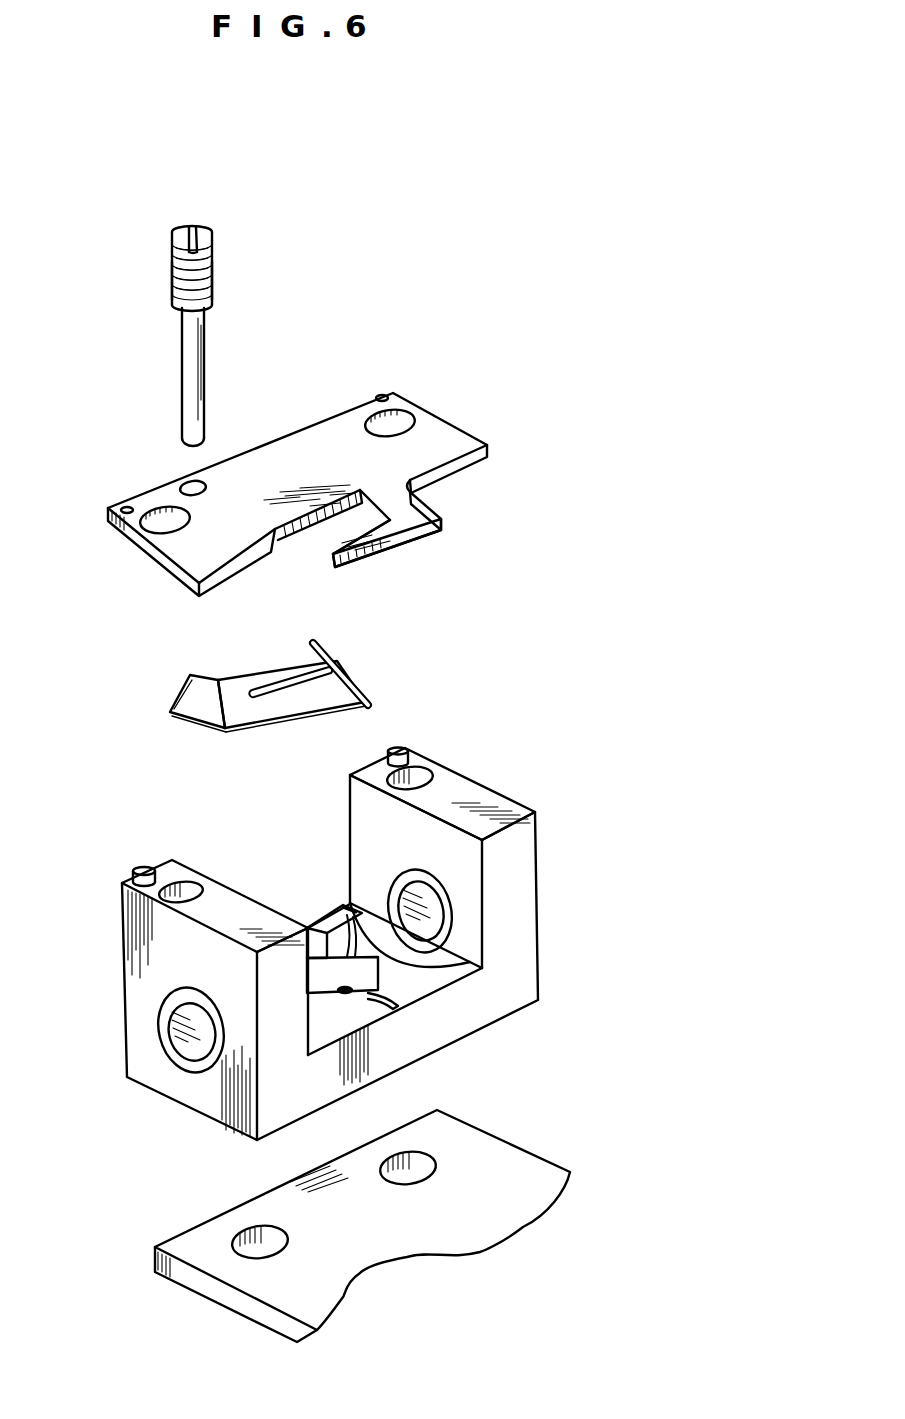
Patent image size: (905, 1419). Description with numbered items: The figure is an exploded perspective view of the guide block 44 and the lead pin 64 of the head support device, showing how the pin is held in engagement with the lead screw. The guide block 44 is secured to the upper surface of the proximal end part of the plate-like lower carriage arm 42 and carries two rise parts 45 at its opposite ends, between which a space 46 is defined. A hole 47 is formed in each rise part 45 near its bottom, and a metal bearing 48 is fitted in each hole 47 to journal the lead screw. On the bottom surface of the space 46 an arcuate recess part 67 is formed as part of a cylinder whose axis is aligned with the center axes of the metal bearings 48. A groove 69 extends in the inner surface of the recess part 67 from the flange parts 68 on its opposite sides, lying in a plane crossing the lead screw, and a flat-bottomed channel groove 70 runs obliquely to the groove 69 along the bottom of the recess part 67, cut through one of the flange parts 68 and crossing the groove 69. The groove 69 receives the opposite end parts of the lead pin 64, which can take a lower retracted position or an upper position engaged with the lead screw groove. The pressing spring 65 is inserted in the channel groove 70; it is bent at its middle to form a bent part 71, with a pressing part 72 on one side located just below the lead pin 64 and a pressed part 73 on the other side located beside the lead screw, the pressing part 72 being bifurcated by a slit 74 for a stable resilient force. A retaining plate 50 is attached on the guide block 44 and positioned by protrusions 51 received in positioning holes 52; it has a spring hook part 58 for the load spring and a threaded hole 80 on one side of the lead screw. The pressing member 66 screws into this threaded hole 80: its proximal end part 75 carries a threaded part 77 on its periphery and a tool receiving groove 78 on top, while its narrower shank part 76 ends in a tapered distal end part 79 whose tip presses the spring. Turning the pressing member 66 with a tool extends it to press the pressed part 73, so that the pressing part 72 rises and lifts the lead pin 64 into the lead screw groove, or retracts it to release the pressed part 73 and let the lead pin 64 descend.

The lower carriage arm 42 is at (178, 1293).
The guide block 44 is at (352, 912).
The rise parts 45 is at (538, 820).
The space 46 is at (379, 937).
The hole 47 is at (440, 902).
The metal bearing 48 is at (470, 952).
The retaining plate 50 is at (264, 450).
The protrusions 51 is at (405, 750).
The locating hole 52 is at (384, 396).
The spring hook part 58 is at (400, 547).
The lead pin 64 is at (357, 664).
The pressing spring 65 is at (195, 687).
The pressing member 66 is at (182, 309).
The recess part 67 is at (408, 975).
The flange parts 68 is at (405, 979).
The groove 69 is at (345, 917).
The channel groove 70 is at (348, 993).
The bent part 71 is at (217, 686).
The pressing part 72 is at (288, 705).
The pressed part 73 is at (168, 712).
The slit 74 is at (282, 688).
The proximal end part 75 is at (214, 232).
The shank part 76 is at (181, 378).
The threaded part 77 is at (176, 295).
The tool receiving groove 78 is at (188, 228).
The distal end part 79 is at (182, 443).
The threaded hole 80 is at (180, 488).